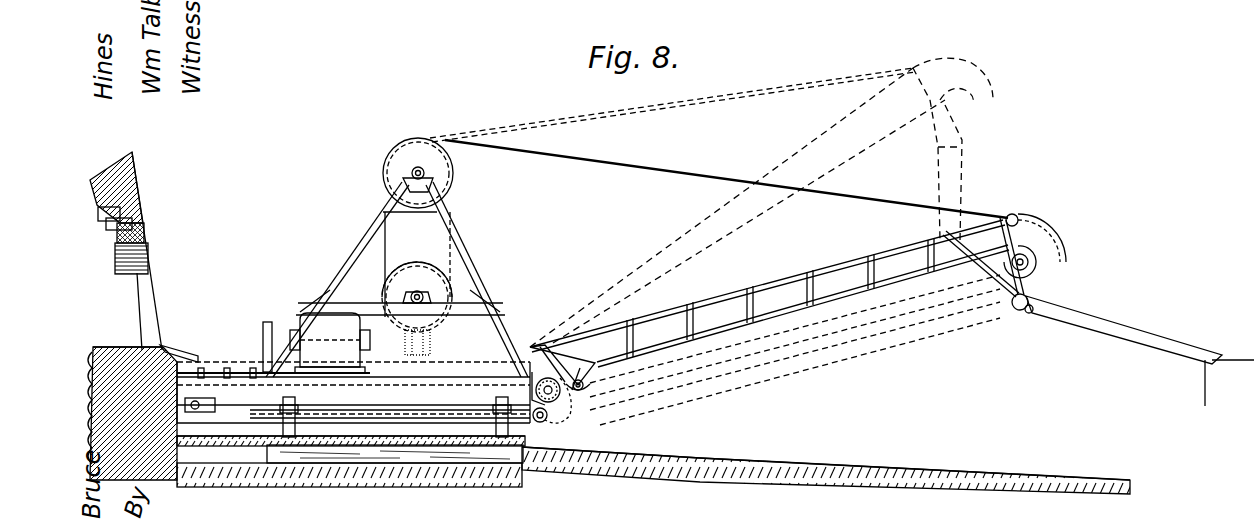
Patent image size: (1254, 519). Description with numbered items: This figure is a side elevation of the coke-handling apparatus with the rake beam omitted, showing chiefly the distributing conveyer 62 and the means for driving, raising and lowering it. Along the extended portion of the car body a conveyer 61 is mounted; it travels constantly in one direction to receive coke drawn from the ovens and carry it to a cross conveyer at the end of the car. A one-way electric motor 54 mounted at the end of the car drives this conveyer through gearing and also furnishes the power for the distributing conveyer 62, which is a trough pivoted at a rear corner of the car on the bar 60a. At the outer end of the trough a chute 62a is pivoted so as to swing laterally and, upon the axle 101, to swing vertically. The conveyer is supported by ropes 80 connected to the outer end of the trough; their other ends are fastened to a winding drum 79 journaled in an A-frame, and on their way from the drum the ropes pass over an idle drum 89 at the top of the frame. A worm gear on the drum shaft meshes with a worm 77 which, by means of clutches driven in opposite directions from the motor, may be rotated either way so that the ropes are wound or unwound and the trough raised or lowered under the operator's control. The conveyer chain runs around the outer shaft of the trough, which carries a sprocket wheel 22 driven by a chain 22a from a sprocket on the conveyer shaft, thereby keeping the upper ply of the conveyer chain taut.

The sprocket wheel 22 is at (1040, 262).
The chain 22a is at (983, 294).
The one-way electric motor 54 is at (330, 343).
The bar 60a is at (554, 395).
The conveyer 61 is at (240, 368).
The distributing conveyer 62 is at (755, 290).
The chute 62a is at (1087, 318).
The worm 77 is at (353, 399).
The drum 79 is at (420, 273).
The ropes 80 is at (690, 174).
The idle drum 89 is at (452, 178).
The axle 101 is at (1032, 313).